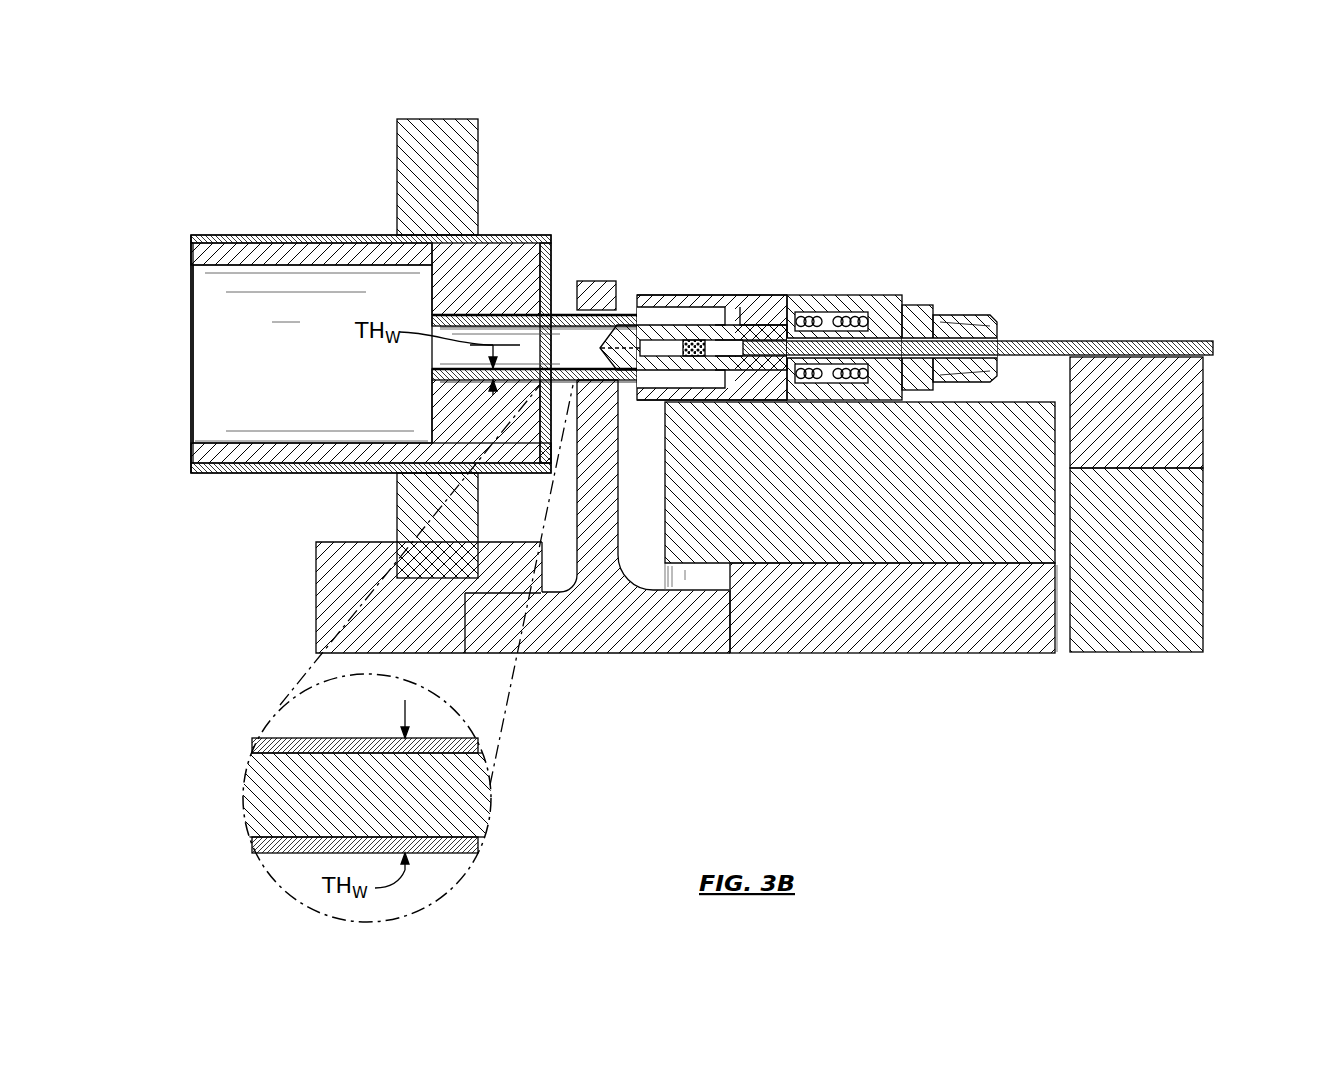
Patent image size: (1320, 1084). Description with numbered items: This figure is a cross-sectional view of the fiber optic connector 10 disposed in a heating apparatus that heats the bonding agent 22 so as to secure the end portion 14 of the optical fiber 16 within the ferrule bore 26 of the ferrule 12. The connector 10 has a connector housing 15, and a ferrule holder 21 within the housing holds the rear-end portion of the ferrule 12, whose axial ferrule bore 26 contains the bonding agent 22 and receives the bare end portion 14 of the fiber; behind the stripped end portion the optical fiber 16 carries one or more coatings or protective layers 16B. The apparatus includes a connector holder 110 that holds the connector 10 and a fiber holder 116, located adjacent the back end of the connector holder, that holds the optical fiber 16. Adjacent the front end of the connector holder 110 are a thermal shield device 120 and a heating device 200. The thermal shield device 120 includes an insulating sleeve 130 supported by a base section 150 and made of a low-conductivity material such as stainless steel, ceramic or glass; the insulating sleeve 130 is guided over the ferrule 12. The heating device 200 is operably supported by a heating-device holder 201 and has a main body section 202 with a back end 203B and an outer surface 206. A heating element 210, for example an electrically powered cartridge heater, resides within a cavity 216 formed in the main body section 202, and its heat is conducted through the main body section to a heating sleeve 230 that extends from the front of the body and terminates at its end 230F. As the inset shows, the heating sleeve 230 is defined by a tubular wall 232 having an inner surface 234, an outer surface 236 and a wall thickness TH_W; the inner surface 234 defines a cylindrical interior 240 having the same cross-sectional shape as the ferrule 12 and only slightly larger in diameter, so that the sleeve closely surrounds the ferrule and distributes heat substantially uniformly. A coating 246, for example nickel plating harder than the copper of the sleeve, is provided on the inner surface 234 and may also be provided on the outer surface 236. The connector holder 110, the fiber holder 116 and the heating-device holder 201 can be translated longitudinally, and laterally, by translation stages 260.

The heating device 200 is at (253, 193).
The heating-device holder 201 is at (441, 124).
The main body section 202 is at (500, 246).
The back end 203B is at (188, 476).
The outer surface 206 is at (296, 240).
The heating element 210 is at (312, 354).
The cavity 216 is at (309, 462).
The coating 246 is at (192, 238).
The tubular wall 232 is at (588, 318).
The inner surface 234 is at (462, 382).
The outer surface 236 is at (561, 326).
The cylindrical interior 240 is at (540, 382).
The thermal shield device 120 is at (601, 252).
The heating sleeve 230 is at (606, 385).
The clamp flange 230F is at (604, 402).
The base section 150 is at (598, 545).
The translation stages 260 is at (1192, 552).
The connector holder 110 is at (1030, 410).
The fiber holder 116 is at (1192, 385).
The end portion 14 is at (620, 296).
The connector housing 15 is at (715, 296).
The ferrule holder 21 is at (768, 296).
The ferrule 12 is at (658, 382).
The ferrule bore 26 is at (650, 296).
The bonding agent 22 is at (690, 296).
The insulating sleeve 130 is at (705, 400).
The fiber optic connector 10 is at (848, 290).
The coatings or protective layers 16B is at (915, 340).
The optical fiber 16 is at (1033, 333).